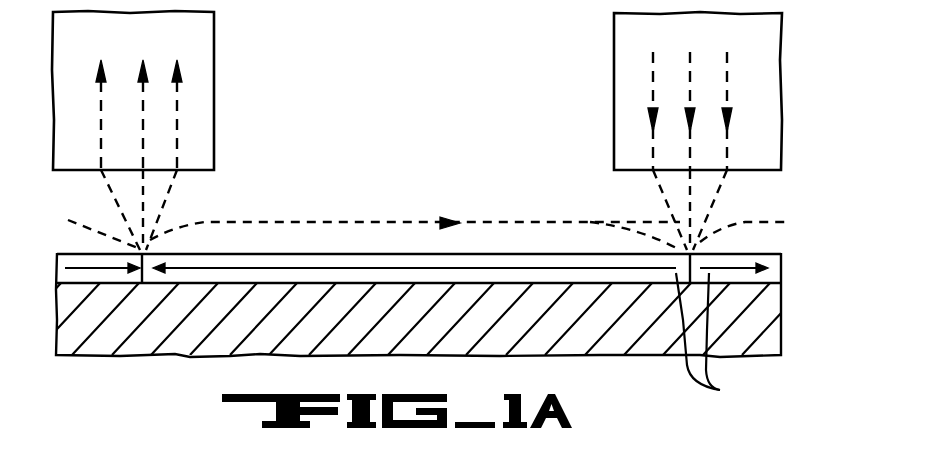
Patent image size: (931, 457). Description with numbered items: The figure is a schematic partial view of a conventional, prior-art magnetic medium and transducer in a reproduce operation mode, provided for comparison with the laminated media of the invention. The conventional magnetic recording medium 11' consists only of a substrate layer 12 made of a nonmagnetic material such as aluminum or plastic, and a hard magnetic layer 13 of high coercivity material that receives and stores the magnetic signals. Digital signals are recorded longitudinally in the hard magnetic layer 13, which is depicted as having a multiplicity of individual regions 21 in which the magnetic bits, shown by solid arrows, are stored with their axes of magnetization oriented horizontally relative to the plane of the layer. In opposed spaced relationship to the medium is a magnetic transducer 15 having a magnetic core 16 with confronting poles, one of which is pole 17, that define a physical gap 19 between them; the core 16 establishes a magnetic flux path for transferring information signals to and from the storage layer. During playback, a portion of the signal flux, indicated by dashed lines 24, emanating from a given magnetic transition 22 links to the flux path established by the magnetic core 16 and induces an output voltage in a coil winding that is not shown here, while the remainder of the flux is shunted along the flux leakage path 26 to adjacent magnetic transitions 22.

The conventional magnetic recording medium 11' is at (419, 225).
The substrate layer 12 is at (170, 360).
The hard magnetic layer 13 is at (522, 262).
The magnetic transducer 15 is at (693, 456).
The magnetic core 16 is at (152, 50).
The pole 17 is at (240, 12).
The physical gap 19 is at (414, 102).
The individual regions 21 is at (722, 343).
The magnetic transition 22 is at (143, 264).
The signal flux 24 is at (177, 135).
The flux leakage path 26 is at (482, 222).